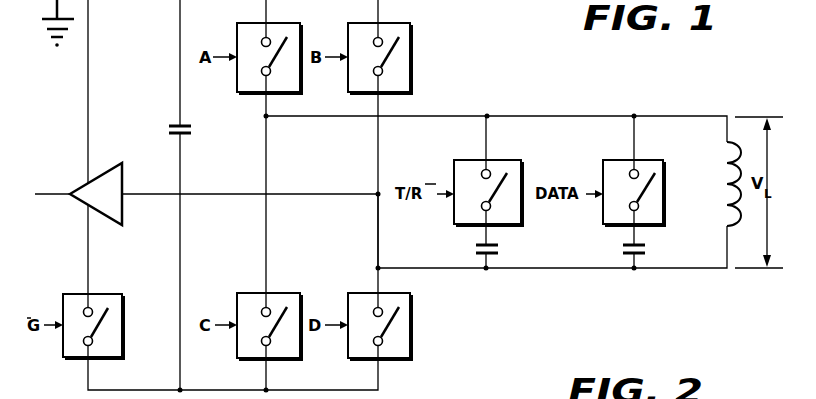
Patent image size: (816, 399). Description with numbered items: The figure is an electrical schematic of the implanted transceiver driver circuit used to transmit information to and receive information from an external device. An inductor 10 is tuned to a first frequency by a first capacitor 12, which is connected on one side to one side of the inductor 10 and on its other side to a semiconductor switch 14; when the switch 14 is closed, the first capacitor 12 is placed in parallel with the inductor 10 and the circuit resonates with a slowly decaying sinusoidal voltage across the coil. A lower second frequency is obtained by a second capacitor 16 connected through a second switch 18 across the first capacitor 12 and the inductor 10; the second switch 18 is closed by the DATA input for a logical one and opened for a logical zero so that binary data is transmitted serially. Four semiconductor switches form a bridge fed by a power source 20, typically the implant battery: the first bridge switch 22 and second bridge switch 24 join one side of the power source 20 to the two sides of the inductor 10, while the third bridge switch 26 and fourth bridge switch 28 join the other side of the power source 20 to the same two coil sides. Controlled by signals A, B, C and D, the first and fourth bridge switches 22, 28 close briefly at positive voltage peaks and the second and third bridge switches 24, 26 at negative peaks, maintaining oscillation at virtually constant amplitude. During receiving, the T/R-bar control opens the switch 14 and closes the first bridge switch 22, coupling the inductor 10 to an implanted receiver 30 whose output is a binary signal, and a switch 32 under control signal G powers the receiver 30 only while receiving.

The inductor 10 is at (727, 152).
The first capacitor 12 is at (498, 248).
The semiconductor switch 14 is at (520, 141).
The second capacitor 16 is at (645, 248).
The second switch 18 is at (661, 141).
The power source 20 is at (169, 125).
The first bridge switch 22 is at (299, 30).
The second bridge switch 24 is at (410, 30).
The third bridge switch 26 is at (300, 300).
The fourth bridge switch 28 is at (410, 302).
The receiver 30 is at (72, 196).
The switch 32 is at (122, 300).